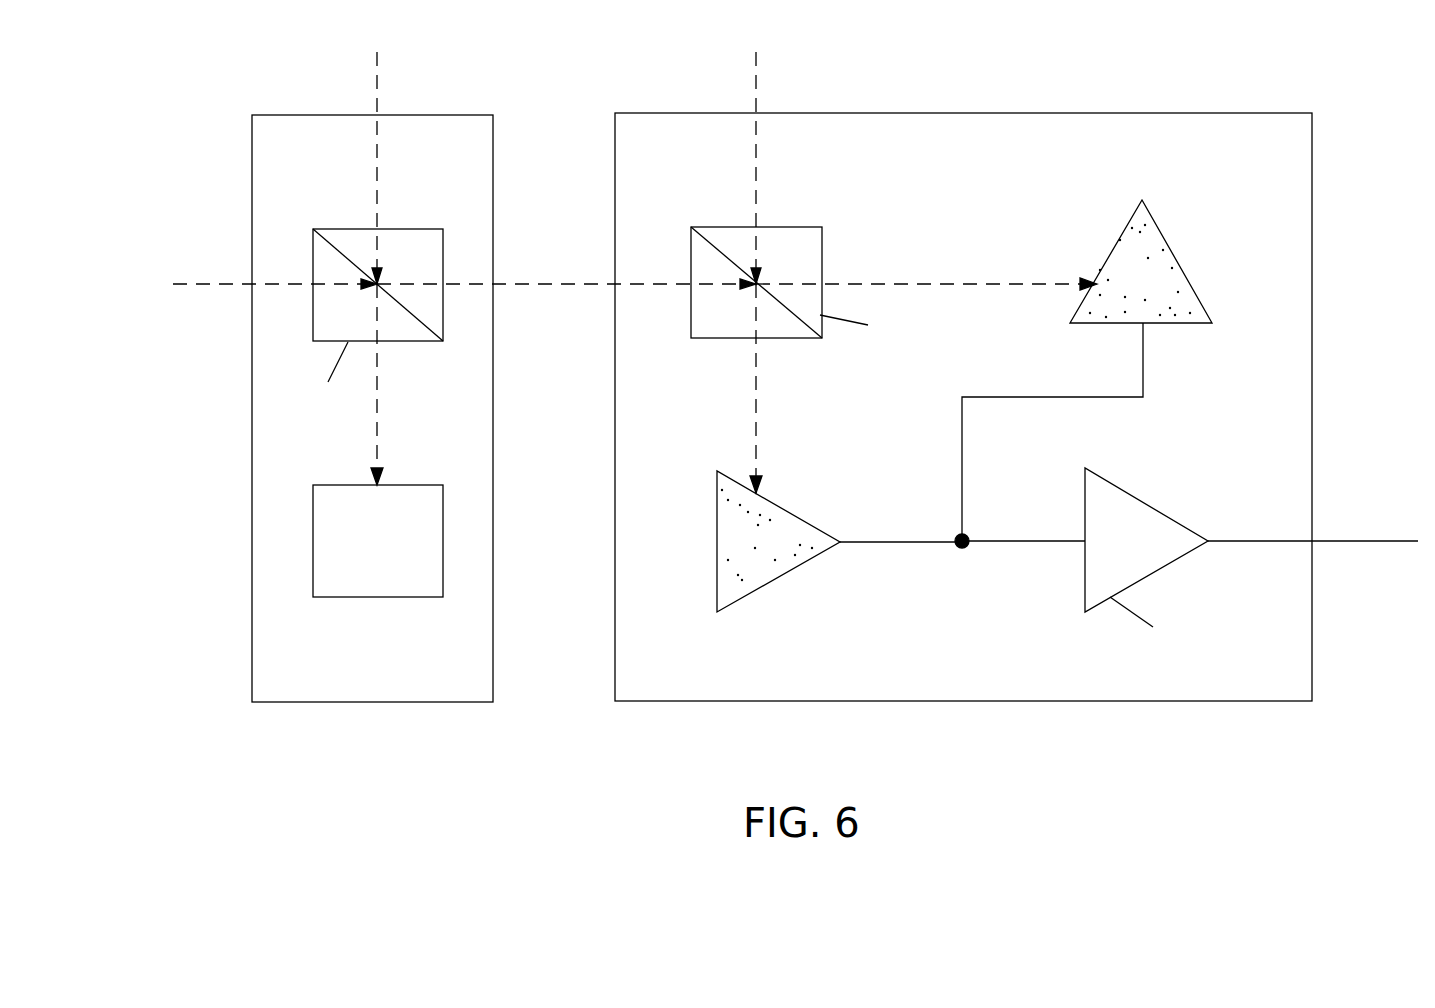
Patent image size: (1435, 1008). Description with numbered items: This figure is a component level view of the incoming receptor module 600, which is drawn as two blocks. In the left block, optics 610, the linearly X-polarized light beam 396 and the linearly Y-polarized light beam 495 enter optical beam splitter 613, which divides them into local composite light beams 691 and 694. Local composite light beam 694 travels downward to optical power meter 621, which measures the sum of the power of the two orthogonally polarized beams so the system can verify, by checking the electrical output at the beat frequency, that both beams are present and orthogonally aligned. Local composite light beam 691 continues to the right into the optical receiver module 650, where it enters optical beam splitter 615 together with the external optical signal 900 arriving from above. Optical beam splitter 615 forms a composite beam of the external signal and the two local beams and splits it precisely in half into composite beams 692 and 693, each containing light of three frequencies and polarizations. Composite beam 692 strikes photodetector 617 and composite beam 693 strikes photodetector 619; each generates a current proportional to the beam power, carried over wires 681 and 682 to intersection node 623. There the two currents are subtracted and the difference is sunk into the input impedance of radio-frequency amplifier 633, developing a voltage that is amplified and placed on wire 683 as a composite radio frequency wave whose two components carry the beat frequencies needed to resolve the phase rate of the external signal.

The incoming receptor module 600 is at (524, 748).
The optics 610 is at (320, 702).
The optical receiver module 650 is at (678, 701).
The linearly Y-polarized light beam 495 is at (378, 100).
The external optical signal 900 is at (758, 80).
The linearly X-polarized light beam 396 is at (250, 283).
The local composite light beam 691 is at (503, 282).
The composite beam 692 is at (930, 280).
The composite beam 693 is at (756, 398).
The local composite light beam 694 is at (378, 448).
The optical beam splitter 613 is at (390, 342).
The optical beam splitter 615 is at (748, 338).
The photodetector 617 is at (1163, 233).
The photodetector 619 is at (715, 542).
The optical power meter 621 is at (403, 558).
The intersection node 623 is at (957, 557).
The radio-frequency amplifier 633 is at (1163, 555).
The wire 681 is at (962, 477).
The wire 682 is at (863, 540).
The wire 683 is at (1330, 541).